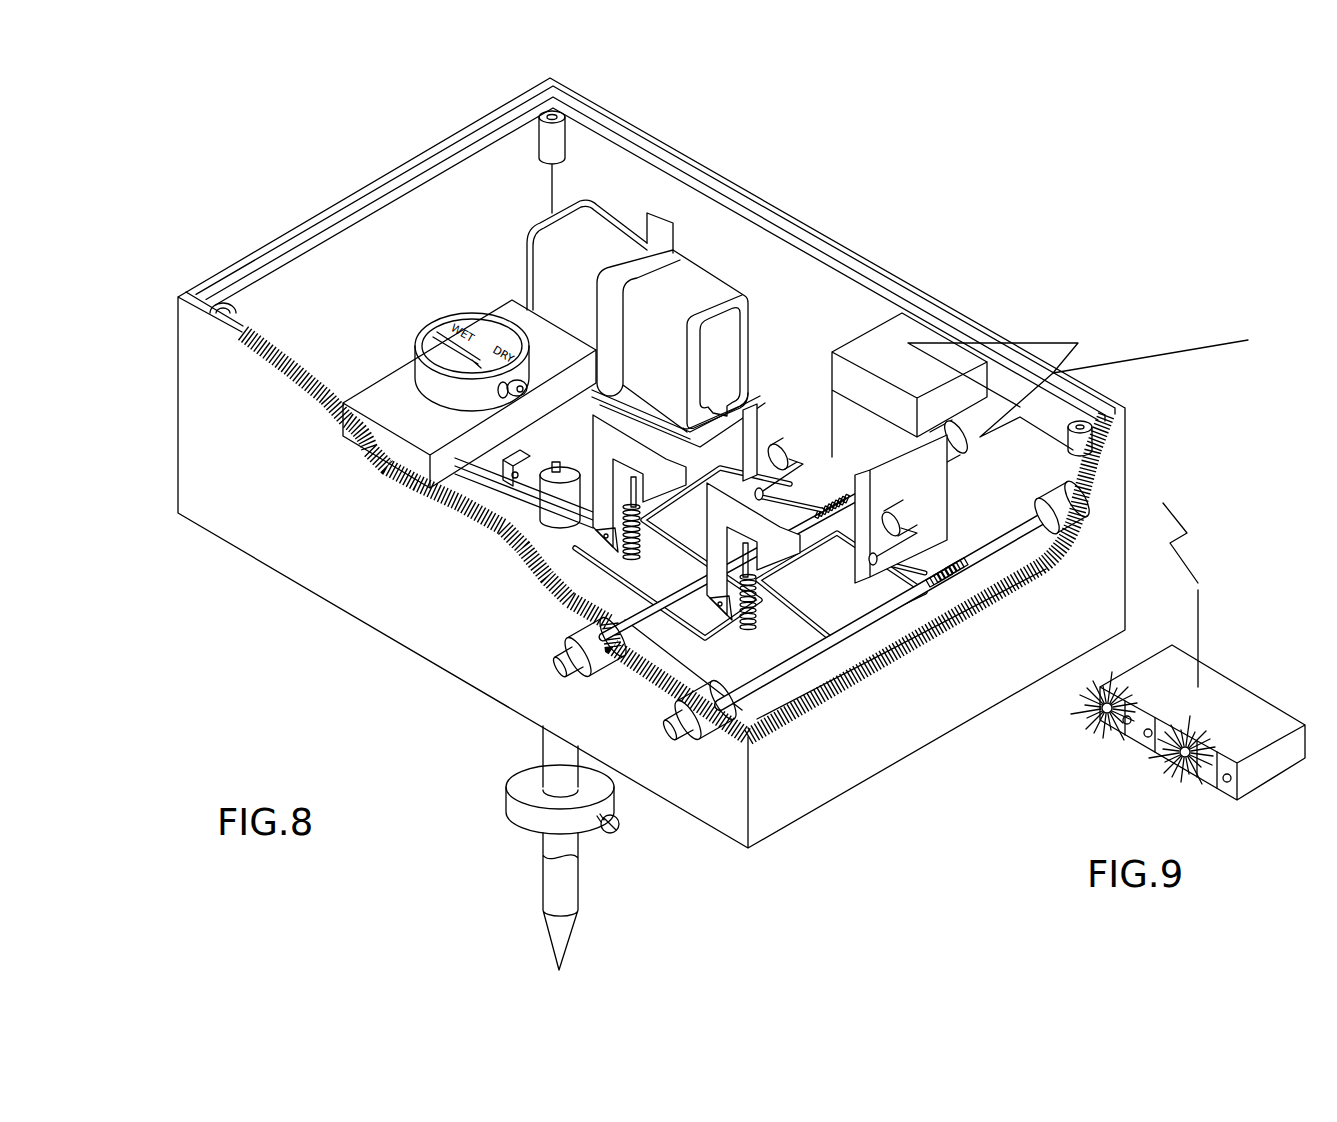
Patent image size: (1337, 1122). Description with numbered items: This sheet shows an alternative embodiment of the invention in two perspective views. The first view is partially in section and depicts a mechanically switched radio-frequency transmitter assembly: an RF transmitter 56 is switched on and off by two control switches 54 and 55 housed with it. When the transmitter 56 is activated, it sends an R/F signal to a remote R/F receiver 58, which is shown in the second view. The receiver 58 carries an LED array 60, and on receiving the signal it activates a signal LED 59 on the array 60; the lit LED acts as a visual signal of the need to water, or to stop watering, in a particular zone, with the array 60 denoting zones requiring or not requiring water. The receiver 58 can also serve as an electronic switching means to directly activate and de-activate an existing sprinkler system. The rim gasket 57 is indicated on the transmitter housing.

In FIG. 8, the control switch 54 is at (805, 440).
In FIG. 8, the control switch 55 is at (900, 450).
In FIG. 8, the RF transmitter 56 is at (893, 340).
In FIG. 8, the gasket rim 57 is at (1050, 340).
In FIG. 9, the R/F receiver 58 is at (1225, 705).
In FIG. 9, the signal LED 59 is at (1100, 713).
In FIG. 9, the LED array 60 is at (1147, 750).